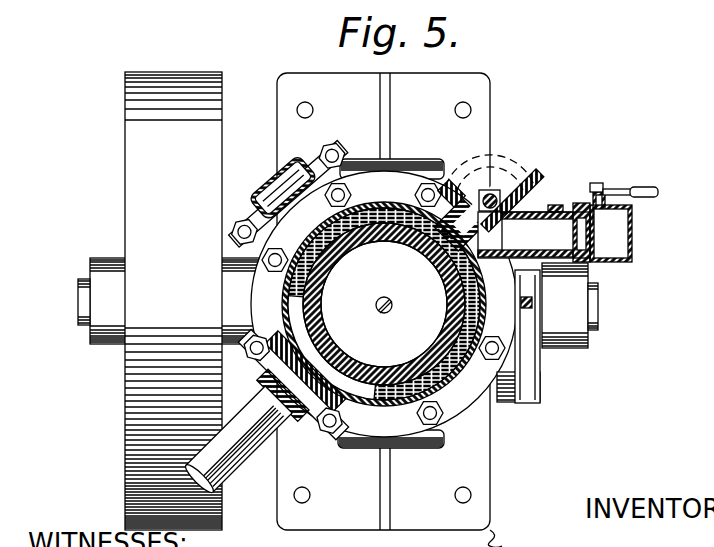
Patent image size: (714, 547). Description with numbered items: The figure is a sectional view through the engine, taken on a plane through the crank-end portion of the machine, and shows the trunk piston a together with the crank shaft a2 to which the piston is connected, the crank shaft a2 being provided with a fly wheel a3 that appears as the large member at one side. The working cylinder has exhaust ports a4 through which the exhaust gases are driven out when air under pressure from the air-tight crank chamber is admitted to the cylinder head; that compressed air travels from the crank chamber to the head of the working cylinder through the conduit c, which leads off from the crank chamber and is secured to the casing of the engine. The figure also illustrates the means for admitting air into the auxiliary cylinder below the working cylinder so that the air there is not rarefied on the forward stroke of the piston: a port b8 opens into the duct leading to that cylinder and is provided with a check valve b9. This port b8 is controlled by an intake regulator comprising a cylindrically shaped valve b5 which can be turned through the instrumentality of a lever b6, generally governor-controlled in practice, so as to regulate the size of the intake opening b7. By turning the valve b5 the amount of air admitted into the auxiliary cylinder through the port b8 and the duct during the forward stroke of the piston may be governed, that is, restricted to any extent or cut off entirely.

The trunk piston a is at (384, 304).
The crank shaft a2 is at (596, 313).
The fly wheel a3 is at (572, 367).
The exhaust ports a4 is at (373, 372).
The cylindrically shaped valve b5 is at (614, 242).
The lever b6 is at (645, 186).
The intake opening b7 is at (573, 220).
The port b8 is at (503, 242).
The check valve b9 is at (462, 246).
The conduit c is at (278, 186).